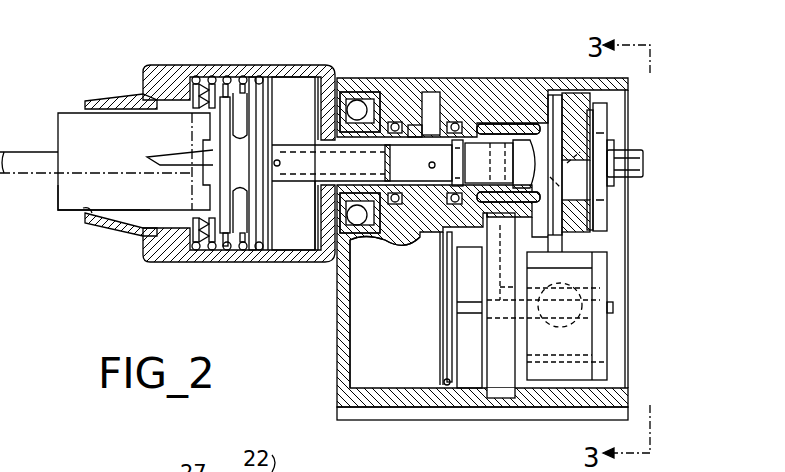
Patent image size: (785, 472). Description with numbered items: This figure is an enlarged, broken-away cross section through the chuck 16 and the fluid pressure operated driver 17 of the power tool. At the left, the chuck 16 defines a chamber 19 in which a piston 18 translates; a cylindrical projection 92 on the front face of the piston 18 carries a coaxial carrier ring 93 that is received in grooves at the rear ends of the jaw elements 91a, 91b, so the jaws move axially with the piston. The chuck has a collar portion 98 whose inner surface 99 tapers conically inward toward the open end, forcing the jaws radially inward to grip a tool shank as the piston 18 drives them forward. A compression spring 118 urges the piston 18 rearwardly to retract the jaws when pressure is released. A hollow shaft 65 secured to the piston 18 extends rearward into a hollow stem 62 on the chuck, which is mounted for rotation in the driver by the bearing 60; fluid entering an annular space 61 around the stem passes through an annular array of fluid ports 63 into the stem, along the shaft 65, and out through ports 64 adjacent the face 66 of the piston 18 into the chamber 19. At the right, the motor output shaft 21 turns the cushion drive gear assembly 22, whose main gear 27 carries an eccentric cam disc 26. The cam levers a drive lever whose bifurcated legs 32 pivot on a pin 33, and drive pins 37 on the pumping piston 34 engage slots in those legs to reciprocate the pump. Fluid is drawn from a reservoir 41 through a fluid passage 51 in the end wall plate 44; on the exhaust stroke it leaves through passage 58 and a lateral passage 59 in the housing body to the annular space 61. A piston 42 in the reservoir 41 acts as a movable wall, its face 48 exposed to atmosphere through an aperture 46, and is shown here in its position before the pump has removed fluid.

The chuck 16 is at (168, 65).
The driver 17 is at (386, 50).
The piston 18 is at (263, 73).
The chamber 19 is at (306, 252).
The output shaft 21 is at (643, 162).
The cushion drive gear assembly 22 is at (600, 106).
The cam disc 26 is at (617, 137).
The main gear 27 is at (572, 93).
The legs 32 is at (600, 337).
The pin 33 is at (607, 362).
The pumping piston 34 is at (600, 290).
The drive pins 37 is at (610, 310).
The reservoir 41 is at (480, 350).
The piston 42 is at (438, 377).
The end wall plate 44 is at (495, 388).
The aperture 46 is at (337, 310).
The face 48 is at (440, 298).
The fluid passage 51 is at (517, 400).
The passage 58 is at (497, 277).
The lateral passage 59 is at (437, 238).
The bearing 60 is at (368, 93).
The annular space 61 is at (435, 102).
The hollow stem 62 is at (412, 125).
The fluid ports 63 is at (433, 185).
The ports 64 is at (280, 160).
The hollow shaft 65 is at (312, 181).
The face 66 is at (275, 236).
The jaw element 91a is at (82, 125).
The jaw element 91b is at (72, 200).
The cylindrical projection 92 is at (202, 73).
The carrier ring 93 is at (232, 73).
The collar portion 98 is at (118, 97).
The inner surface 99 is at (72, 200).
The compression spring 118 is at (228, 252).